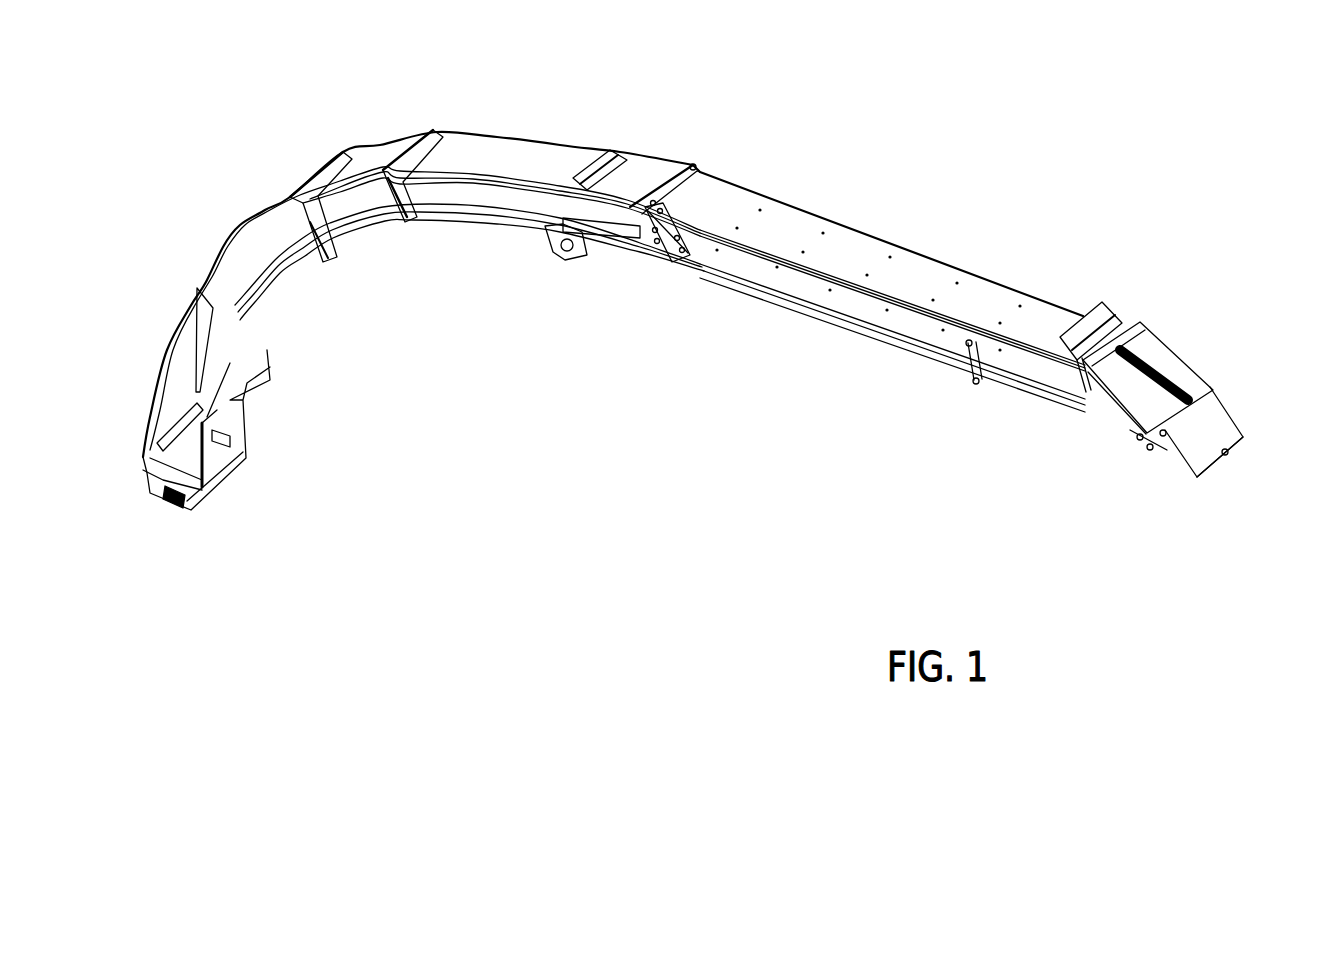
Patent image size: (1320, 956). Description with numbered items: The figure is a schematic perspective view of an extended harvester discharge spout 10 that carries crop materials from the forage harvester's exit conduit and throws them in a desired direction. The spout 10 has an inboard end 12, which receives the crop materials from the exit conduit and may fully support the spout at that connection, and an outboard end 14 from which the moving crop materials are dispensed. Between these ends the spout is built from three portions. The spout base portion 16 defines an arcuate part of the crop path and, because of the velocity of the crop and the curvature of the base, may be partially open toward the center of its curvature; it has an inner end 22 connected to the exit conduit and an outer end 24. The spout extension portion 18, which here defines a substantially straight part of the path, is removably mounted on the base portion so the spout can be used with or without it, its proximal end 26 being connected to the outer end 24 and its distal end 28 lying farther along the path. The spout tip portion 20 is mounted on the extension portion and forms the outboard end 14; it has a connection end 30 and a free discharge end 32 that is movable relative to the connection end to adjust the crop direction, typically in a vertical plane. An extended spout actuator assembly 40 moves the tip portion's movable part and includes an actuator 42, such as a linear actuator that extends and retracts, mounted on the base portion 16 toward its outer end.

The discharge spout 10 is at (838, 141).
The inboard end 12 is at (246, 456).
The outboard end 14 is at (1175, 471).
The spout base portion 16 is at (229, 240).
The spout extension portion 18 is at (752, 283).
The spout tip portion 20 is at (1153, 348).
The inner end 22 is at (188, 499).
The outer end 24 is at (638, 256).
The proximal end 26 is at (711, 165).
The distal end 28 is at (1060, 397).
The connection end 30 is at (1124, 327).
The free discharge end 32 is at (1218, 472).
The extended spout actuator assembly 40 is at (688, 292).
The actuator 42 is at (551, 259).